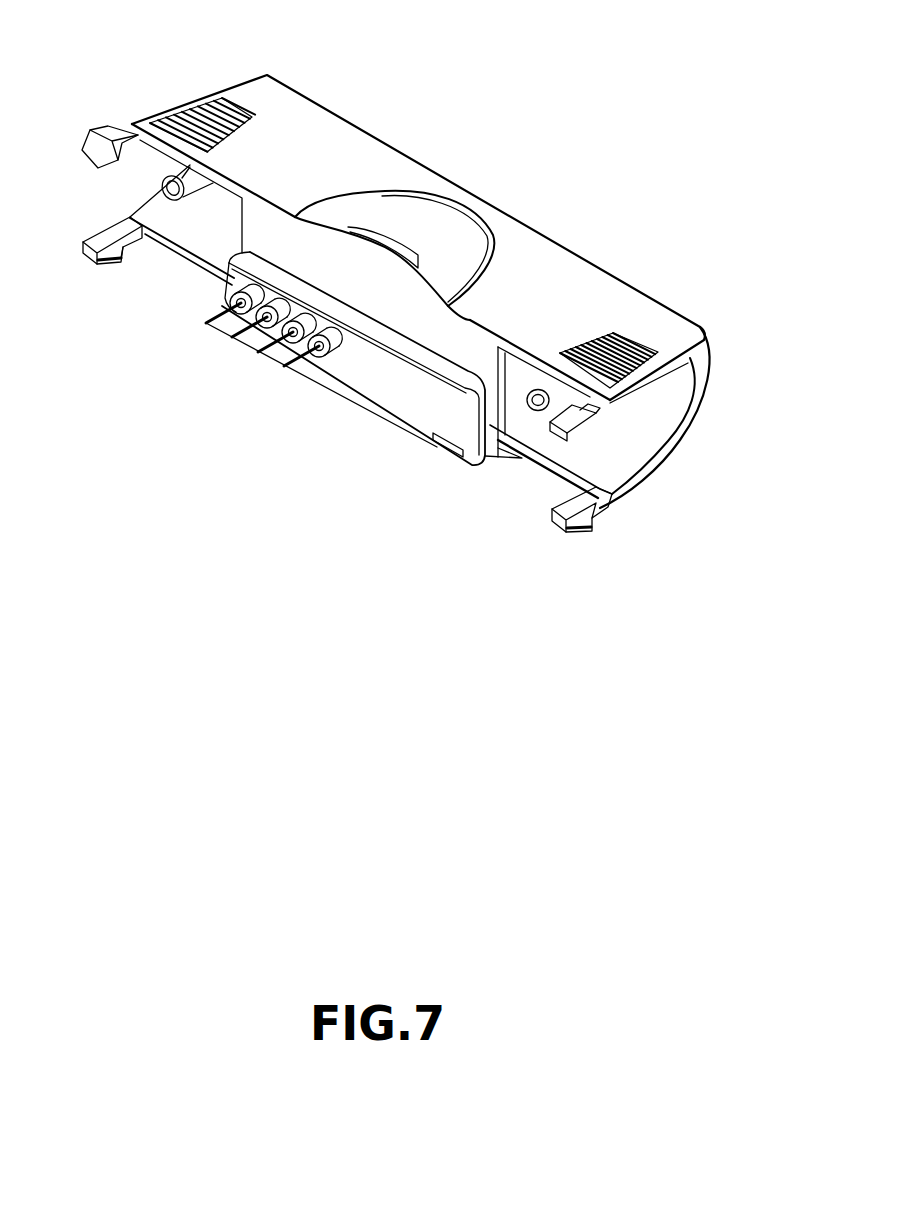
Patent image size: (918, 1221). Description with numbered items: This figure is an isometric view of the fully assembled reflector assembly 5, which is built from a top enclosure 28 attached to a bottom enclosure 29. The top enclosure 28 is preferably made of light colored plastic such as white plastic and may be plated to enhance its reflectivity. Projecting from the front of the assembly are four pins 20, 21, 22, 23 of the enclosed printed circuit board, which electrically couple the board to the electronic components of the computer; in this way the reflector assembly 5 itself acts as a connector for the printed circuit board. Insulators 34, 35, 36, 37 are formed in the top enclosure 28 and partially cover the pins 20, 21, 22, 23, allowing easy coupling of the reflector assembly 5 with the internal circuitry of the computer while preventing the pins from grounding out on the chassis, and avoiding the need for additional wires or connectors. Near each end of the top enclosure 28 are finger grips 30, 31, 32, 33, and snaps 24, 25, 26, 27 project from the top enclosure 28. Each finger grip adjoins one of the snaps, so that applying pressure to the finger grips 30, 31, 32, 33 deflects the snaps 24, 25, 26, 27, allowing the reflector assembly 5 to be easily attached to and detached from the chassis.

The reflector assembly 5 is at (506, 79).
The pin 20 is at (287, 369).
The pin 21 is at (256, 354).
The pin 22 is at (228, 339).
The pin 23 is at (203, 324).
The snap 24 is at (583, 420).
The snap 25 is at (588, 518).
The snap 26 is at (90, 133).
The snap 27 is at (95, 258).
The top enclosure 28 is at (517, 232).
The bottom enclosure 29 is at (412, 438).
The finger grip 30 is at (184, 111).
The finger grip 31 is at (176, 258).
The finger grip 32 is at (643, 341).
The finger grip 33 is at (543, 476).
The insulator 34 is at (236, 289).
The insulator 35 is at (256, 332).
The insulator 36 is at (272, 356).
The insulator 37 is at (333, 348).